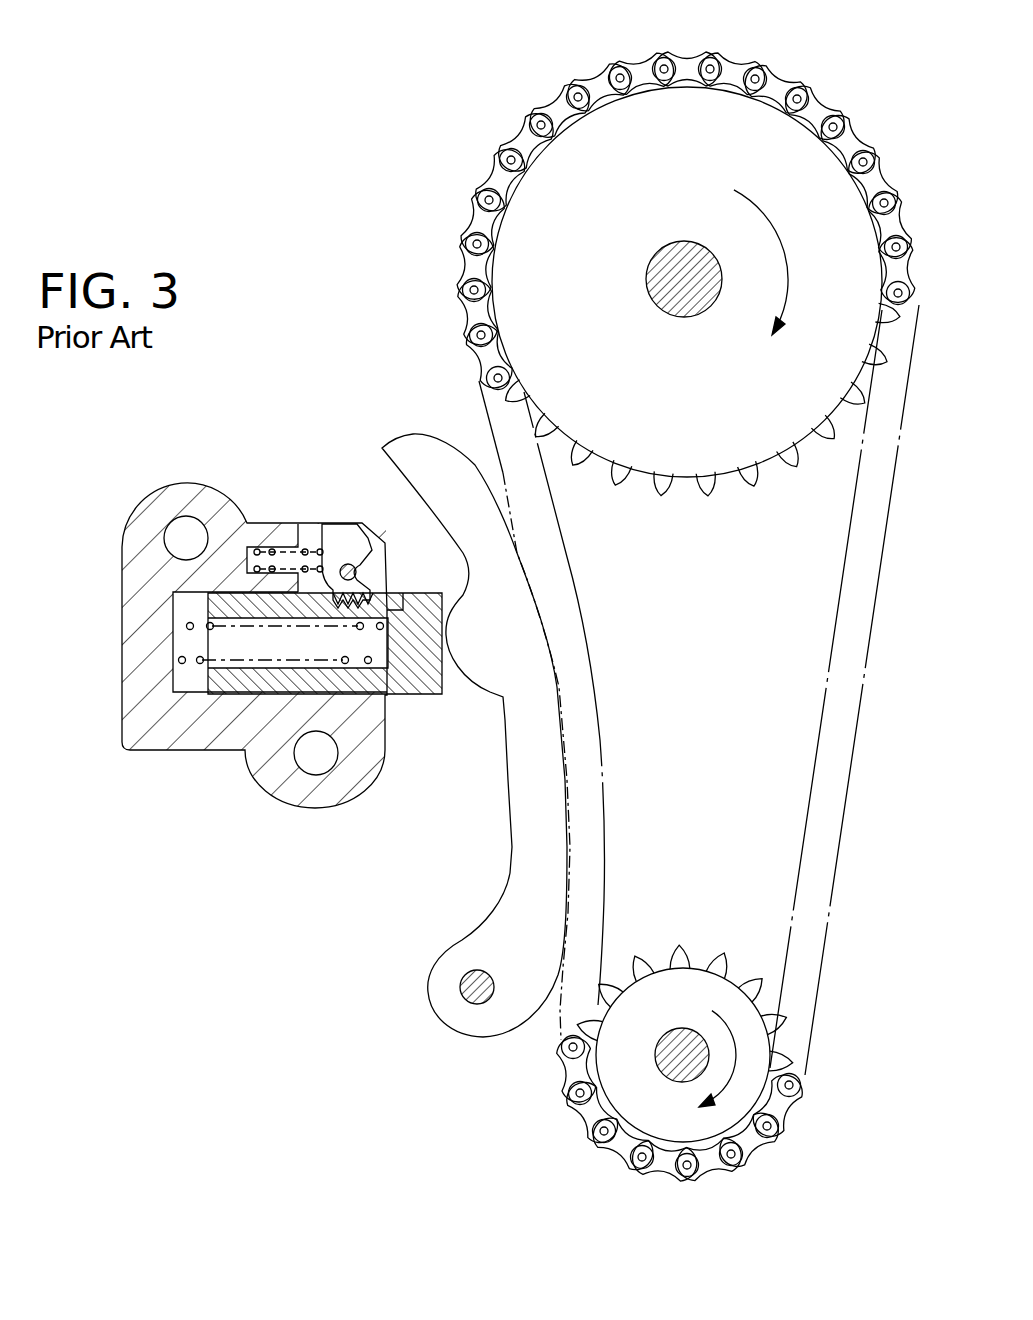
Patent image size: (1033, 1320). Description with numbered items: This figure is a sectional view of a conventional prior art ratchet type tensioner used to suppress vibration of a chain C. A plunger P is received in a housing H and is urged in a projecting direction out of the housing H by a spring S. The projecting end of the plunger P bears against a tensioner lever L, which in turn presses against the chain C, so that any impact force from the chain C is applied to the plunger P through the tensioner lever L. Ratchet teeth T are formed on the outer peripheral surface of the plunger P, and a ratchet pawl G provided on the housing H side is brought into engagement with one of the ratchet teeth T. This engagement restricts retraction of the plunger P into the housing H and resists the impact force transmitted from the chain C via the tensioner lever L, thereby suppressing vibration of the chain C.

The chain C is at (462, 237).
The tensioner lever L is at (532, 650).
The housing H is at (163, 740).
The plunger P is at (430, 688).
The spring S is at (173, 637).
The ratchet pawl G is at (339, 537).
The ratchet teeth T is at (370, 585).